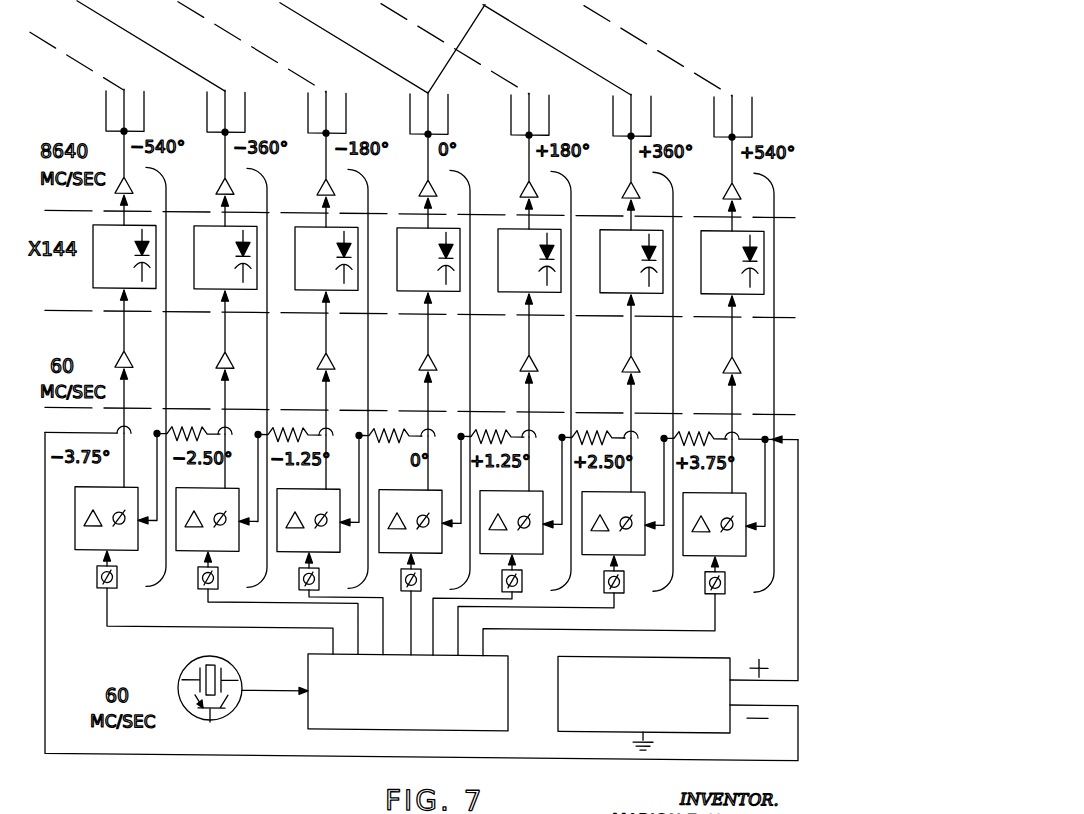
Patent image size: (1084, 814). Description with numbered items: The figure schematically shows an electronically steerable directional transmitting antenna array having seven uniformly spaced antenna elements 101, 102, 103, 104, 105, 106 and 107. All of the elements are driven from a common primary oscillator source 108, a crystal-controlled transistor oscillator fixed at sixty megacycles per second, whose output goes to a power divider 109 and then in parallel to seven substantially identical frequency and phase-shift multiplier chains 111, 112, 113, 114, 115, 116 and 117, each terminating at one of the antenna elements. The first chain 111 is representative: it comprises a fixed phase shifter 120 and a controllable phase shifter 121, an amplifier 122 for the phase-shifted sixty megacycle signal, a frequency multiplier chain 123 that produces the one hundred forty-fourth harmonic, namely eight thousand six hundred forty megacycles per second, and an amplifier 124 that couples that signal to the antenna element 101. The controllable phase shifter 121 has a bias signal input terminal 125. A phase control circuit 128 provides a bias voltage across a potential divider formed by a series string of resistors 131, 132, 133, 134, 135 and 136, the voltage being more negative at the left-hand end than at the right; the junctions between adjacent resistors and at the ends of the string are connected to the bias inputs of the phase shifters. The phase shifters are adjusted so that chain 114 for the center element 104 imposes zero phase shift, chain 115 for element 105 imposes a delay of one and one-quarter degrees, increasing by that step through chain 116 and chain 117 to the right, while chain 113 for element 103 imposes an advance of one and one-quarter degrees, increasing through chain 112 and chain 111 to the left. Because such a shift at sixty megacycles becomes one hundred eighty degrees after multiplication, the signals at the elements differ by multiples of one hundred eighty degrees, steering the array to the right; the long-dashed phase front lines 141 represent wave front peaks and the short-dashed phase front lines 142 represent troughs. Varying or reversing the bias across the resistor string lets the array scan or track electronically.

The antenna element 101 is at (106, 118).
The antenna element 102 is at (207, 121).
The antenna element 103 is at (308, 116).
The antenna element 104 is at (410, 120).
The antenna element 105 is at (511, 120).
The antenna element 106 is at (613, 116).
The antenna element 107 is at (714, 121).
The primary oscillator source 108 is at (243, 677).
The power divider 109 is at (508, 698).
The frequency and phase-shift multiplier chain 111 is at (167, 349).
The frequency and phase-shift multiplier chain 112 is at (268, 349).
The frequency and phase-shift multiplier chain 113 is at (369, 349).
The frequency and phase-shift multiplier chain 114 is at (471, 349).
The frequency and phase-shift multiplier chain 115 is at (572, 349).
The frequency and phase-shift multiplier chain 116 is at (674, 349).
The frequency and phase-shift multiplier chain 117 is at (775, 349).
The fixed phase shifter 120 is at (97, 581).
The controllable phase shifter 121 is at (92, 552).
The amplifier 122 is at (118, 355).
The frequency multiplier chain 123 is at (93, 267).
The amplifier 124 is at (114, 186).
The bias signal input terminal 125 is at (143, 519).
The phase control circuit 128 is at (558, 679).
The resistor 131 is at (196, 430).
The resistor 132 is at (297, 430).
The resistor 133 is at (398, 430).
The resistor 134 is at (500, 430).
The resistor 135 is at (601, 430).
The resistor 136 is at (703, 430).
The long-dashed phase front lines 141 is at (165, 54).
The short-dashed phase front lines 142 is at (94, 71).